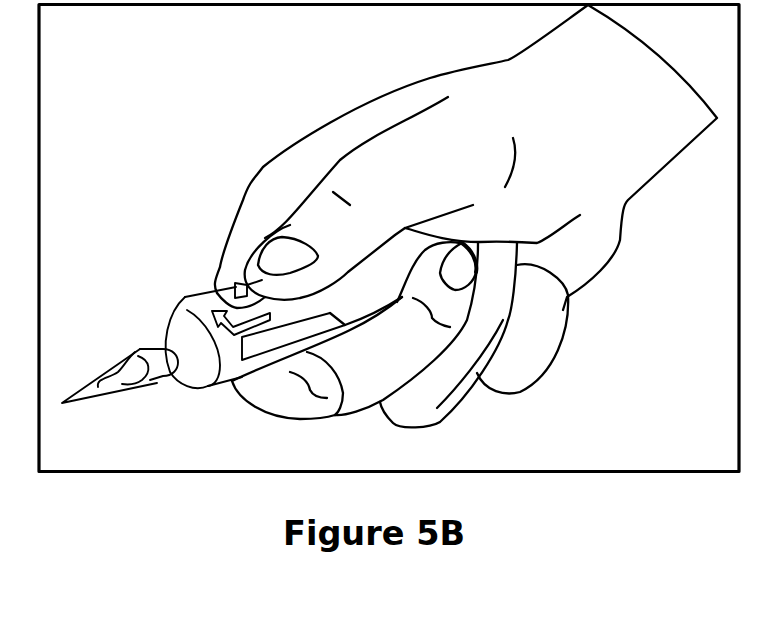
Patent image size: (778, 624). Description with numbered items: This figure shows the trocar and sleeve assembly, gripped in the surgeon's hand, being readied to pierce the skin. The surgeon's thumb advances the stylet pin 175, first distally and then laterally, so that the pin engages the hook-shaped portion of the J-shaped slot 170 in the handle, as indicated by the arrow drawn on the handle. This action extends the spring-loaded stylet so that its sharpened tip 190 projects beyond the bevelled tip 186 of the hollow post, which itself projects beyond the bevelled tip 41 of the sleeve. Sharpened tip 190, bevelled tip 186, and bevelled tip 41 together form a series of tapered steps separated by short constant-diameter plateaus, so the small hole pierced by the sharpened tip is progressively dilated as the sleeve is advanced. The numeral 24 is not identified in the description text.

The hand-held device housing 24 is at (190, 385).
The J-shaped slot 170 is at (200, 303).
The pin 175 is at (238, 283).
The bevelled tip 186 is at (123, 390).
The bevelled tip 41 is at (137, 350).
The sharpened tip 190 is at (85, 388).